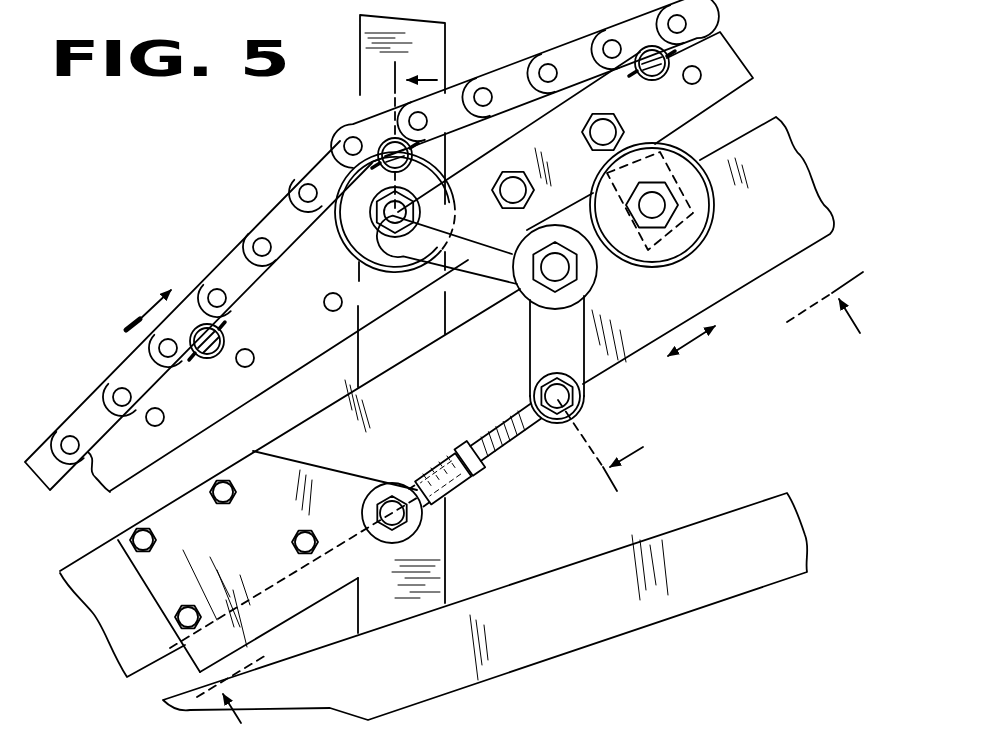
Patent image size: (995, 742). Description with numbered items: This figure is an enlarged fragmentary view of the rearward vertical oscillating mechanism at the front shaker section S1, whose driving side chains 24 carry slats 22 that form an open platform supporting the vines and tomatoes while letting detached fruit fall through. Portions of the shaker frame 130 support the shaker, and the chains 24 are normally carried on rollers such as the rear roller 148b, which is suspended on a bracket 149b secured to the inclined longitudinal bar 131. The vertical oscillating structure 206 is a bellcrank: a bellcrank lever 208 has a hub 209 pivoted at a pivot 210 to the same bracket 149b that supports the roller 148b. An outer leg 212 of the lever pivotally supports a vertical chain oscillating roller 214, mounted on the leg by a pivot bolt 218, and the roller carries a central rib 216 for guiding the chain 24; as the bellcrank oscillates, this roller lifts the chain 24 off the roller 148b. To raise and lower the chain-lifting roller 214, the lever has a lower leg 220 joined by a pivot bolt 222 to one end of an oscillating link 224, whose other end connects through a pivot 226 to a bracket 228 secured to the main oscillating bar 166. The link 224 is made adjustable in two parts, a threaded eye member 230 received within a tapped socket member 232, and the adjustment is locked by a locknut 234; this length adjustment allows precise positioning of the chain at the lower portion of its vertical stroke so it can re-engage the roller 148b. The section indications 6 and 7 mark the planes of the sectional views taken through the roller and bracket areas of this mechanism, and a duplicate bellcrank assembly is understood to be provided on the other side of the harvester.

The front shaker section S1 is at (126, 171).
The vertical oscillating structure 206 is at (290, 137).
The driving side chain 24 is at (267, 208).
The slat 22 is at (386, 170).
The pivot bolt 218 is at (443, 189).
The vertical chain oscillating roller 214 is at (350, 247).
The central rib 216 is at (388, 275).
The outer leg 212 is at (482, 258).
The hub 209 is at (521, 291).
The pivot 210 is at (562, 263).
The bellcrank lever 208 is at (526, 354).
The lower leg 220 is at (532, 369).
The pivot bolt 222 is at (565, 398).
The threaded eye member 230 is at (509, 446).
The locknut 234 is at (461, 440).
The tapped socket member 232 is at (453, 495).
The oscillating link 224 is at (420, 481).
The pivot 226 is at (376, 517).
The roller 148b is at (711, 243).
The bracket 149b is at (605, 263).
The longitudinal bar 131 is at (143, 460).
The bracket 228 is at (152, 528).
The main oscillating bar 166 is at (107, 620).
The shaker frame 130 is at (738, 604).
The section line 6- 6 is at (507, 279).
The section line 7- 7 is at (530, 497).